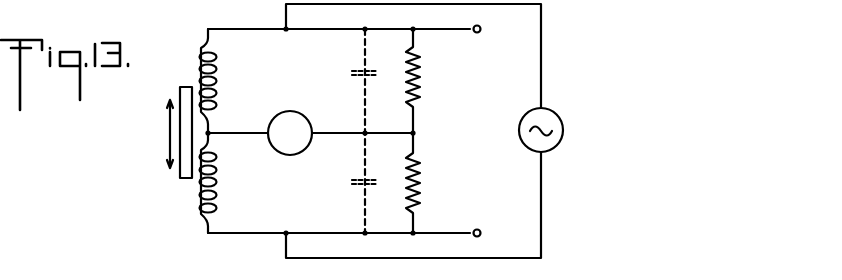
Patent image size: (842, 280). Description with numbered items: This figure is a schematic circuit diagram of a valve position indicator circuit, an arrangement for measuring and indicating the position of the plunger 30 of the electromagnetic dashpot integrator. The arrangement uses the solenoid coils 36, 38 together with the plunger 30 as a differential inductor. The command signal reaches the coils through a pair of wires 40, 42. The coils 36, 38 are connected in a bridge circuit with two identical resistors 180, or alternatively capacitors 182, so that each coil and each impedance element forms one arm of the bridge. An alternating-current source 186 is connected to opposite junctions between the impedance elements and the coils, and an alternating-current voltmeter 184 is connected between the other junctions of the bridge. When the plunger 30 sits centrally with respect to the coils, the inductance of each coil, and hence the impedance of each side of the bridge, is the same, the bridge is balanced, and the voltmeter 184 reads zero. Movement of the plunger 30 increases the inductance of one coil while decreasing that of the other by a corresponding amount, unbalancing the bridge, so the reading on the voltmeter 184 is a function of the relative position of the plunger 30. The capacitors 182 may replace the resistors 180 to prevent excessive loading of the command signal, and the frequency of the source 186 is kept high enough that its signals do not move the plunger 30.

The plunger 30 is at (181, 179).
The solenoid coil 36 is at (213, 80).
The solenoid coil 38 is at (216, 200).
The wire 40 is at (473, 31).
The wire 42 is at (465, 231).
The resistor 180 is at (418, 61).
The capacitor 182 is at (358, 66).
The alternating-current voltmeter 184 is at (292, 111).
The alternating-current source 186 is at (562, 121).